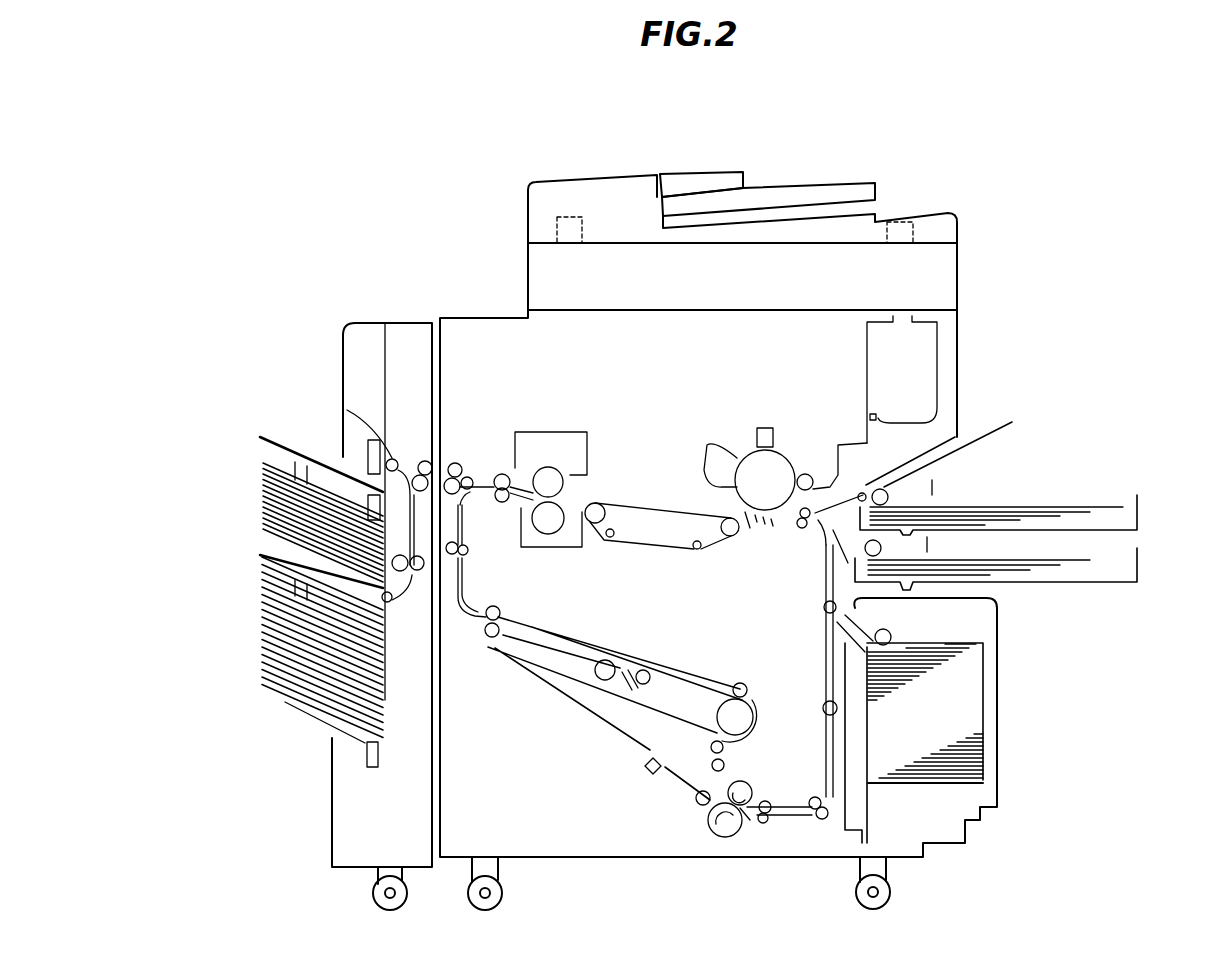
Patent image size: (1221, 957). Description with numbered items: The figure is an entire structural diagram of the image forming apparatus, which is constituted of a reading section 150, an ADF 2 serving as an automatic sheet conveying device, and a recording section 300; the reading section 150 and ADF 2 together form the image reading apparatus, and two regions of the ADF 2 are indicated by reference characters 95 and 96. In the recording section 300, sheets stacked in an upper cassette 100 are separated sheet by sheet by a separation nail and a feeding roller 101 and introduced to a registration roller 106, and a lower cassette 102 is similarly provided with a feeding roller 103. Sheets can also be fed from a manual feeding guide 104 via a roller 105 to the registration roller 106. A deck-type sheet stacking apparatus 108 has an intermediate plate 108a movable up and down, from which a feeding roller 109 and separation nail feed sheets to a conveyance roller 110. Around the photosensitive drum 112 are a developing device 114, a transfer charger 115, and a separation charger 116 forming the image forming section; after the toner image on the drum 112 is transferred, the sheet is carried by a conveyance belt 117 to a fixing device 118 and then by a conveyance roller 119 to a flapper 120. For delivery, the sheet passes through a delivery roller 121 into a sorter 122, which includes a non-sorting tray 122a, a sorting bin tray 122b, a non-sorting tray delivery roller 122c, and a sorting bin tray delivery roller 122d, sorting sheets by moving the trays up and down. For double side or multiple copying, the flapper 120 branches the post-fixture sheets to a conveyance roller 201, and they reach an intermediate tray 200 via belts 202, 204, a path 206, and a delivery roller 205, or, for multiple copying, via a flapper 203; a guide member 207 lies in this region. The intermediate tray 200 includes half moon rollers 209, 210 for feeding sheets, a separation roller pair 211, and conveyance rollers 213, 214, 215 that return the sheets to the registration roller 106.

The ADF 2 is at (633, 193).
The sensor 95 is at (903, 230).
The sensor 96 is at (568, 224).
The reading section 150 is at (947, 287).
The recording section 300 is at (1004, 336).
The upper cassette 100 is at (1142, 513).
The feeding roller 101 is at (888, 495).
The lower cassette 102 is at (1140, 570).
The feeding roller 103 is at (882, 548).
The manual feeding guide 104 is at (995, 440).
The roller 105 is at (878, 490).
The registration roller 106 is at (805, 530).
The sheet stacking apparatus 108 is at (985, 727).
The intermediate plate 108a is at (967, 783).
The feeding roller 109 is at (891, 637).
The conveyance roller 110 is at (825, 607).
The photosensitive drum 112 is at (752, 452).
The developing device 114 is at (813, 480).
The transfer charger 115 is at (766, 530).
The separation charger 116 is at (752, 530).
The conveyance belt 117 is at (690, 510).
The fixing device 118 is at (580, 460).
The conveyance roller 119 is at (472, 520).
The flapper 120 is at (499, 474).
The delivery roller 121 is at (455, 462).
The sorter 122 is at (262, 497).
The non-sorting tray 122a is at (262, 437).
The sorting bin tray 122b is at (262, 578).
The non-sorting tray delivery roller 122c is at (347, 410).
The sorting bin tray delivery roller 122d is at (392, 605).
The intermediate tray 200 is at (585, 712).
The conveyance roller 201 is at (478, 568).
The belt 202 is at (530, 628).
The flapper 203 is at (620, 660).
The belt 204 is at (720, 684).
The delivery roller 205 is at (711, 746).
The path 206 is at (754, 718).
The switching claw 207 is at (628, 690).
The half moon roller 209 is at (646, 770).
The half moon roller 210 is at (697, 802).
The separation roller pair 211 is at (747, 845).
The conveyance roller 213 is at (777, 826).
The conveyance roller 214 is at (813, 798).
The conveyance roller 215 is at (824, 706).